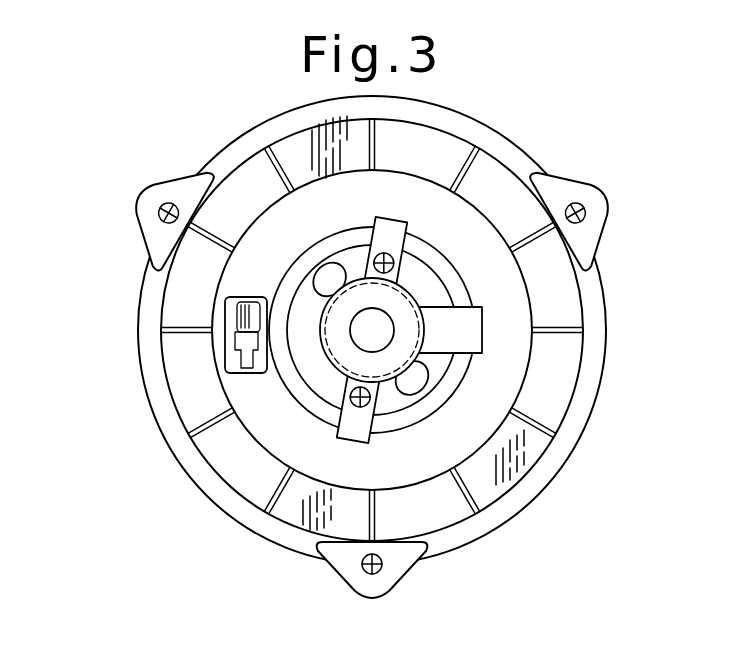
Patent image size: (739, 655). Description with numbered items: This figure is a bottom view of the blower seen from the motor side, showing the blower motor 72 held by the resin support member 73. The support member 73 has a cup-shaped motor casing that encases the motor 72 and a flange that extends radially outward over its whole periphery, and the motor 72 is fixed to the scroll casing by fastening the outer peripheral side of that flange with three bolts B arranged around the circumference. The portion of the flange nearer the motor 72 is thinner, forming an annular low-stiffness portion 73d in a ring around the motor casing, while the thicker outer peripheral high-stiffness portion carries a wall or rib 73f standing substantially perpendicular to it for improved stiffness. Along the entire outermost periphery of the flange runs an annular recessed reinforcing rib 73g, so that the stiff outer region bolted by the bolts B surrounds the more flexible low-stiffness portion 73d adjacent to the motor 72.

The support member 73 is at (496, 187).
The low-stiffness portion 73d is at (500, 287).
The wall (rib) 73f is at (555, 333).
The annular recessed reinforcing rib 73g is at (568, 435).
The blower motor 72 is at (338, 352).
The bolts B is at (158, 214).